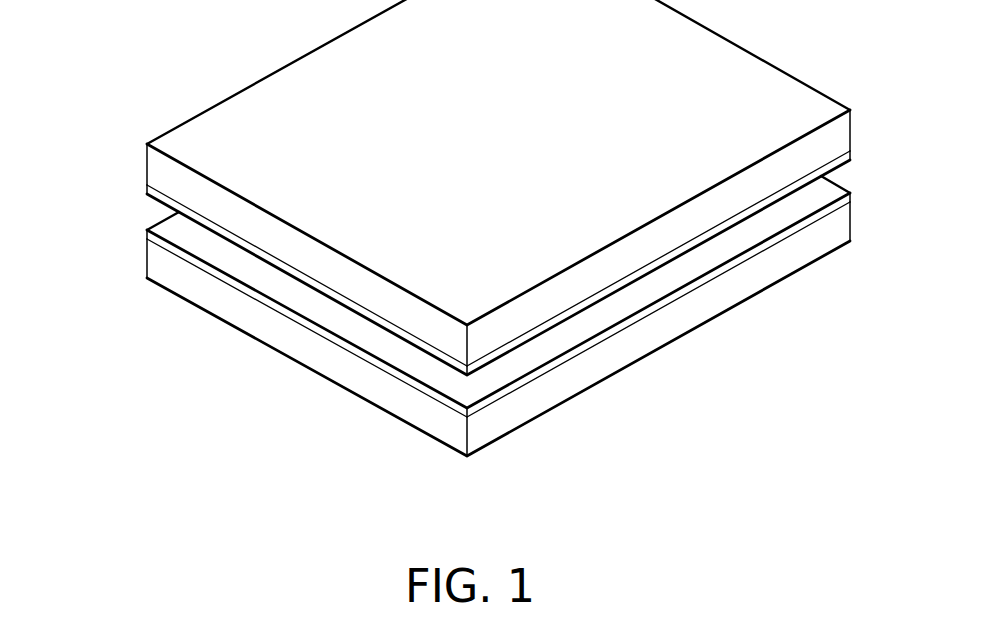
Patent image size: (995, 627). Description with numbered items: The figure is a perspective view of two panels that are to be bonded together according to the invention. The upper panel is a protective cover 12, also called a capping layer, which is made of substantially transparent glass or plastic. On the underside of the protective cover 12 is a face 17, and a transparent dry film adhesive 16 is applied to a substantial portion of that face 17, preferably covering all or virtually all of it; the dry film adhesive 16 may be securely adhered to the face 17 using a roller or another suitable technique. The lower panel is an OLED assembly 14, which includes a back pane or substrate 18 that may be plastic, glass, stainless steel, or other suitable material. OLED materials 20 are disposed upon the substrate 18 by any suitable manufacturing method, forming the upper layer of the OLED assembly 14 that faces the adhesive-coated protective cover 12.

The protective cover 12 is at (147, 152).
The OLED assembly 14 is at (441, 236).
The dry film adhesive 16 is at (158, 201).
The face 17 is at (192, 206).
The substrate 18 is at (322, 358).
The OLED materials 20 is at (217, 253).